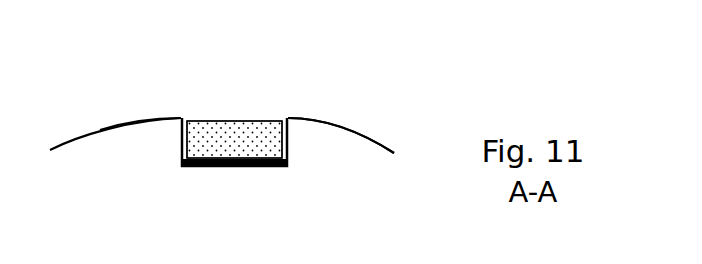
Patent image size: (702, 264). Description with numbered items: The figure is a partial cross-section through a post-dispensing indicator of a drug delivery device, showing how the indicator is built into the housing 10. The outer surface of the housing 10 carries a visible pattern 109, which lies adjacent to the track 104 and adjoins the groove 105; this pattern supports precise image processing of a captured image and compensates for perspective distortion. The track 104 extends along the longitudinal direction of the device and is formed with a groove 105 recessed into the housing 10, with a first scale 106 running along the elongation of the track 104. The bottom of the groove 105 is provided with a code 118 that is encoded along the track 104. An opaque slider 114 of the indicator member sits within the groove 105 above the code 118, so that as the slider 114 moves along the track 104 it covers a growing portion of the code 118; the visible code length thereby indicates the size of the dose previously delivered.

The housing 10 is at (363, 130).
The visible pattern 109 is at (117, 124).
The track 104 is at (330, 162).
The first scale 106 is at (253, 168).
The code 118 is at (203, 175).
The slider 114 is at (262, 132).
The groove 105 is at (215, 136).